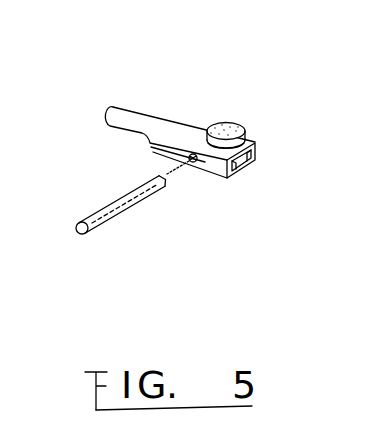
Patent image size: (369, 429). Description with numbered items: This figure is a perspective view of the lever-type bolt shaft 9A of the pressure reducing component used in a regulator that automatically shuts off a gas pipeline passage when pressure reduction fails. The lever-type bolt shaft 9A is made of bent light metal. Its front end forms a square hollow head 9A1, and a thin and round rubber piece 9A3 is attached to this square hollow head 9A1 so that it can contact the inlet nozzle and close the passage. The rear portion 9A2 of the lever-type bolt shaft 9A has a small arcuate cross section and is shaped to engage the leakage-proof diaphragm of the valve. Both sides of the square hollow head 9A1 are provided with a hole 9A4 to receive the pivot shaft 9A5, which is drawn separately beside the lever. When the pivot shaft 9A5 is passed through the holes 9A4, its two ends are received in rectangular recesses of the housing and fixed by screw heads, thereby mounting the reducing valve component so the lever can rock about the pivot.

The lever-type bolt shaft 9A is at (212, 80).
The square hollow head 9A1 is at (257, 150).
The rear portion 9A2 is at (119, 106).
The thin and round rubber piece 9A3 is at (232, 130).
The hole 9A4 is at (183, 165).
The pivot shaft 9A5 is at (108, 206).